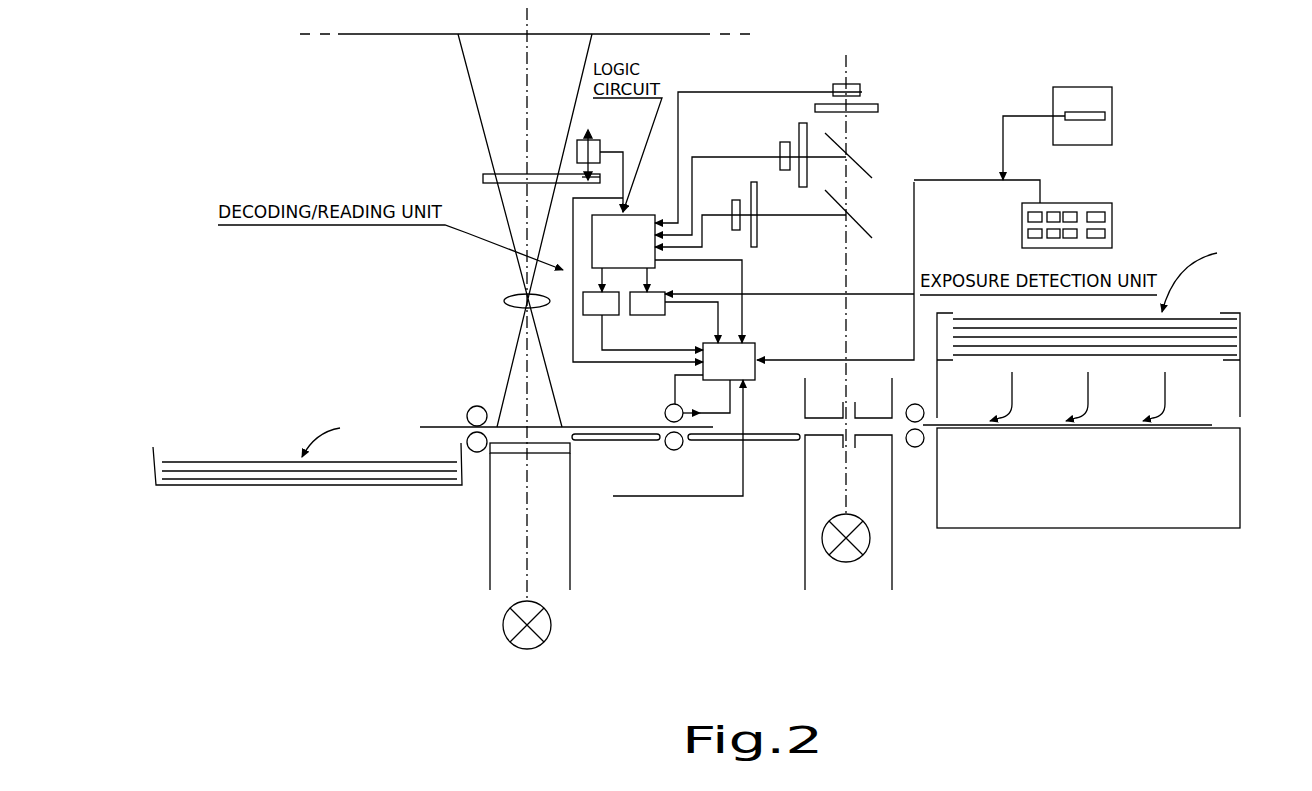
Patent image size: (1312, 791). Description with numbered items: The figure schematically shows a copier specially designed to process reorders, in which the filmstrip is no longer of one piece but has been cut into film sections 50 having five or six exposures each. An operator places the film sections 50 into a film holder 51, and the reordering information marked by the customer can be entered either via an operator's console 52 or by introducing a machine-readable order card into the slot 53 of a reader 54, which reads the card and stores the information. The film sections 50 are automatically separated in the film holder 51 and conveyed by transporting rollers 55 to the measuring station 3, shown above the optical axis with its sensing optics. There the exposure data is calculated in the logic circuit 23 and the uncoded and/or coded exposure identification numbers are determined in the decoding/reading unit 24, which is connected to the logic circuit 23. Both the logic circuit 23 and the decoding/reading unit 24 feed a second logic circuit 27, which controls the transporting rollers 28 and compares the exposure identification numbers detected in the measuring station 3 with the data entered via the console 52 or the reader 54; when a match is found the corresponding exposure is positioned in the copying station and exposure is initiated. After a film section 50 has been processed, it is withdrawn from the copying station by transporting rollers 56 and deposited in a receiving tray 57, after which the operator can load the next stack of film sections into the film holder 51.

The measuring station 3 is at (790, 465).
The logic circuit 23 is at (634, 222).
The decoding/reading unit 24 is at (612, 307).
The second logic circuit 27 is at (757, 355).
The transporting rollers 28 is at (665, 409).
The film sections 50 is at (1198, 318).
The film holder 51 is at (1240, 387).
The operator's console 52 is at (1115, 220).
The slot 53 is at (1105, 116).
The reader 54 is at (1083, 90).
The transporting rollers 55 is at (915, 447).
The transporting rollers 56 is at (473, 404).
The receiving tray 57 is at (142, 462).